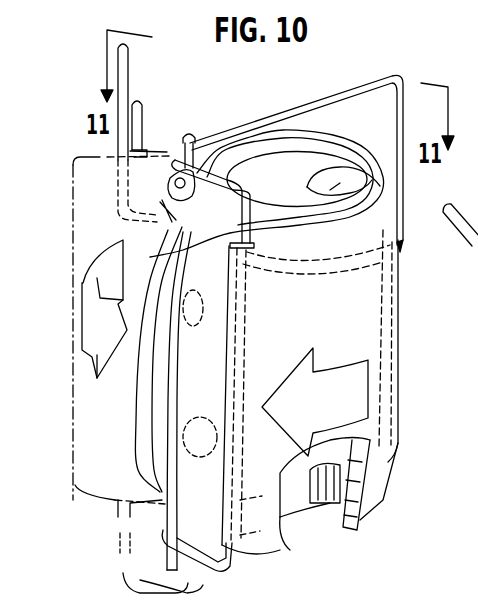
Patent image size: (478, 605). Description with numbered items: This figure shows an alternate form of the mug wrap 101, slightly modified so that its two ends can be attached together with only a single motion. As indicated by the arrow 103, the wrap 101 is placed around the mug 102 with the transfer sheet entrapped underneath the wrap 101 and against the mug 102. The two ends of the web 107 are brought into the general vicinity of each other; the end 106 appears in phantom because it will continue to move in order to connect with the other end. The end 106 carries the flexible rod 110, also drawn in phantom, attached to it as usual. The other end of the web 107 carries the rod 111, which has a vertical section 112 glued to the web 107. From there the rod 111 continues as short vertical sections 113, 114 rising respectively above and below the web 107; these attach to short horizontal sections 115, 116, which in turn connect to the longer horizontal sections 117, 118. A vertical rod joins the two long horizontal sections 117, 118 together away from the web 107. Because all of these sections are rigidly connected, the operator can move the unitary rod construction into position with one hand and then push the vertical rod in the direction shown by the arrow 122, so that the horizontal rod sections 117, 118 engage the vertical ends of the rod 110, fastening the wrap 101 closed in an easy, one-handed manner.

The mug wrap 101 is at (347, 320).
The mug 102 is at (381, 180).
The arrow 103 is at (103, 328).
The end of the web 106 is at (100, 457).
The web 107 is at (348, 309).
The flexible rod 110 is at (143, 123).
The rod 111 is at (240, 360).
The vertical section 112 is at (240, 458).
The short vertical section 113 is at (250, 210).
The short vertical section 114 is at (237, 553).
The short horizontal section 115 is at (230, 171).
The short horizontal section 116 is at (120, 563).
The long horizontal section 117 is at (128, 85).
The long horizontal section 118 is at (122, 532).
The arrow 122 is at (288, 95).